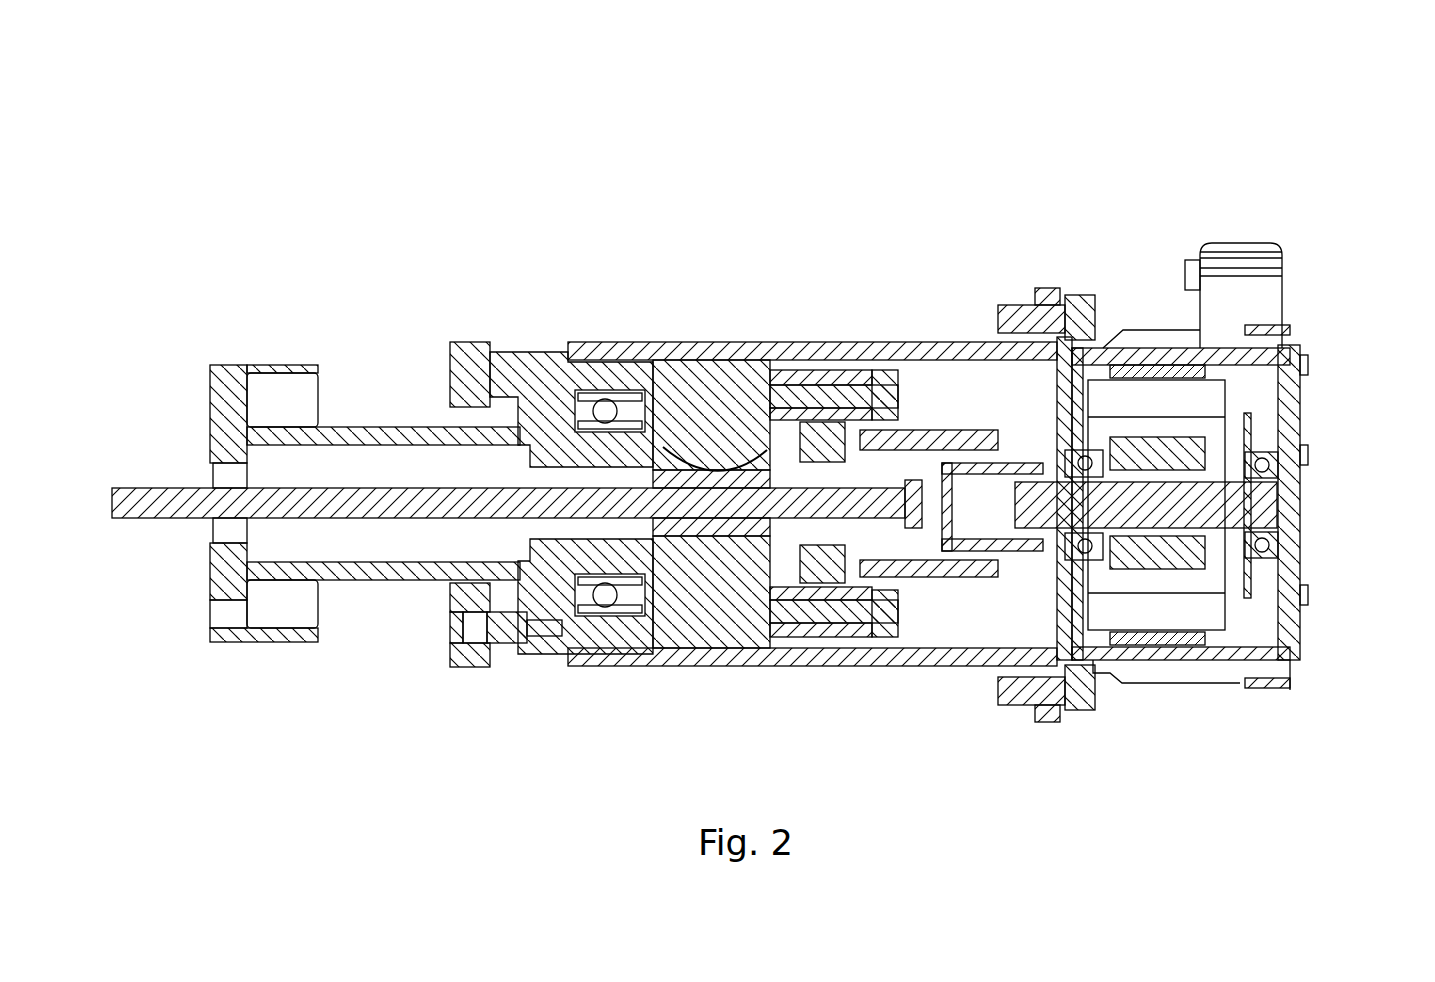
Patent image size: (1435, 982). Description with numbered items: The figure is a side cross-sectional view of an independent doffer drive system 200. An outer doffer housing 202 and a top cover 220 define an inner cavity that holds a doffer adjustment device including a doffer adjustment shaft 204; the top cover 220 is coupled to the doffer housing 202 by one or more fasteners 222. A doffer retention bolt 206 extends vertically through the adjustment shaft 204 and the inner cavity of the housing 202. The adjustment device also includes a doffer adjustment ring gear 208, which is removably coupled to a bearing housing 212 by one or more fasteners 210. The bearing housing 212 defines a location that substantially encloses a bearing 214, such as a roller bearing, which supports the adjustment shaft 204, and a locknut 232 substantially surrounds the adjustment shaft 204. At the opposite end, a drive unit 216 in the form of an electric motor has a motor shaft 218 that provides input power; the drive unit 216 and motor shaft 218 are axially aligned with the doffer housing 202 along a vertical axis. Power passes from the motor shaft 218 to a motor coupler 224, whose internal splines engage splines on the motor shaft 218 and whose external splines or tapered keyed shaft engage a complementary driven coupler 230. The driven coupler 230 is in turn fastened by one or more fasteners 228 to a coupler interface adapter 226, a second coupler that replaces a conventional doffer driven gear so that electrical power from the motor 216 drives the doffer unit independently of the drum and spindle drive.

The independent doffer drive system 200 is at (382, 176).
The outer doffer housing 202 is at (709, 342).
The doffer adjustment shaft 204 is at (388, 432).
The doffer retention bolt 206 is at (158, 505).
The doffer adjustment ring gear 208 is at (468, 660).
The fasteners 210 is at (505, 632).
The bearing housing 212 is at (608, 632).
The bearing 214 is at (602, 390).
The drive unit 216 is at (1335, 570).
The motor shaft 218 is at (1260, 494).
The top cover 220 is at (1062, 295).
The fasteners 222 is at (1085, 298).
The motor coupler 224 is at (992, 455).
The coupler interface adapter 226 is at (688, 582).
The fasteners 228 is at (826, 380).
The driven coupler 230 is at (925, 400).
The locknut 232 is at (818, 585).